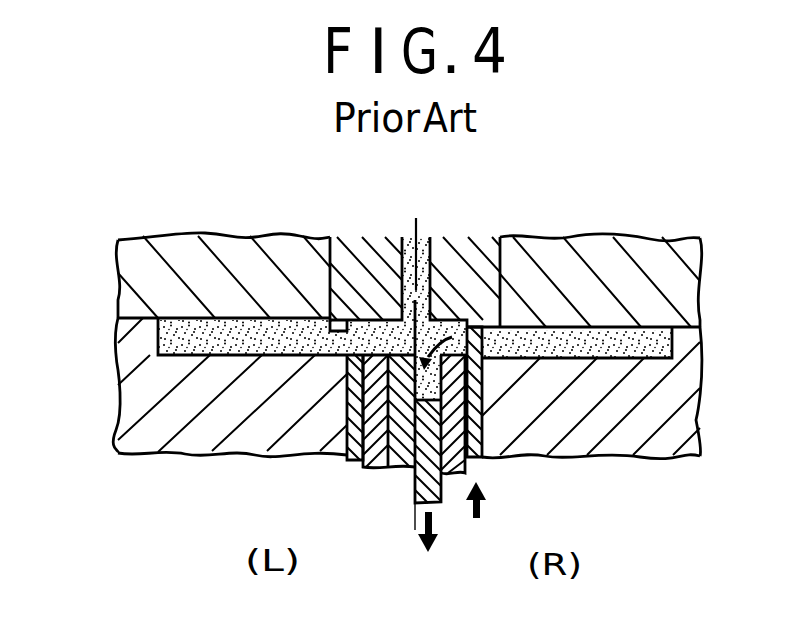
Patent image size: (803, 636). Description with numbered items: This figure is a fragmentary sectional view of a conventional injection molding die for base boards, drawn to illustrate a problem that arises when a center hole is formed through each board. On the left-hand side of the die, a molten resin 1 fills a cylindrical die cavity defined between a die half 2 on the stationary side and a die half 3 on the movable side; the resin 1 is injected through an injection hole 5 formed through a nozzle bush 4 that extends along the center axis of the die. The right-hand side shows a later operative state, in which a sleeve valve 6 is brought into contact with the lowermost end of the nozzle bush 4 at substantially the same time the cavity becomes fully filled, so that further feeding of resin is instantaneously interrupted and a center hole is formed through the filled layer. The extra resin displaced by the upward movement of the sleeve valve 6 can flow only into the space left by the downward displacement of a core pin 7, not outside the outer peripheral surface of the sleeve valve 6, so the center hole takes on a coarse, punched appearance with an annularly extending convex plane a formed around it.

The molten resin 1 is at (177, 333).
The die half on a stationary side 2 is at (243, 257).
The die half on a movable side 3 is at (127, 416).
The nozzle bush 4 is at (472, 256).
The injection hole 5 is at (408, 232).
The sleeve valve 6 is at (357, 450).
The core pin 7 is at (413, 482).
The annularly extending convex plane a is at (520, 322).